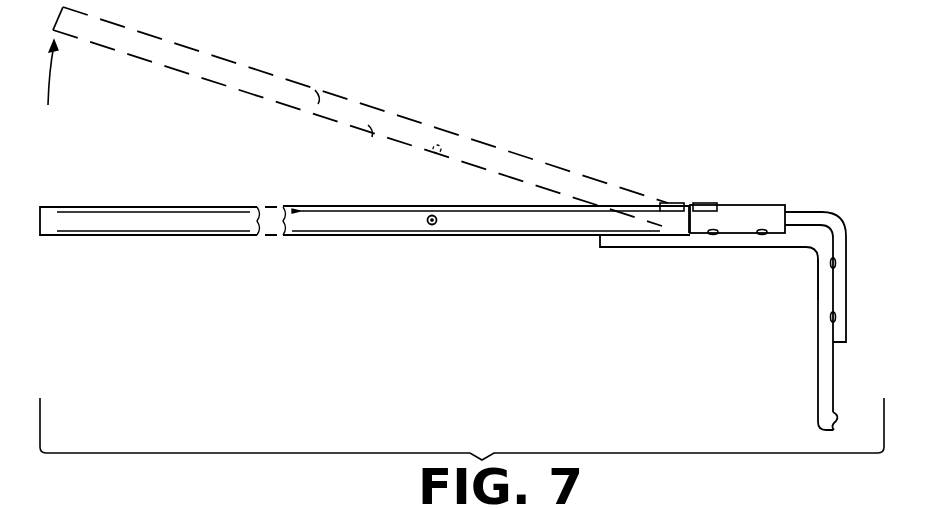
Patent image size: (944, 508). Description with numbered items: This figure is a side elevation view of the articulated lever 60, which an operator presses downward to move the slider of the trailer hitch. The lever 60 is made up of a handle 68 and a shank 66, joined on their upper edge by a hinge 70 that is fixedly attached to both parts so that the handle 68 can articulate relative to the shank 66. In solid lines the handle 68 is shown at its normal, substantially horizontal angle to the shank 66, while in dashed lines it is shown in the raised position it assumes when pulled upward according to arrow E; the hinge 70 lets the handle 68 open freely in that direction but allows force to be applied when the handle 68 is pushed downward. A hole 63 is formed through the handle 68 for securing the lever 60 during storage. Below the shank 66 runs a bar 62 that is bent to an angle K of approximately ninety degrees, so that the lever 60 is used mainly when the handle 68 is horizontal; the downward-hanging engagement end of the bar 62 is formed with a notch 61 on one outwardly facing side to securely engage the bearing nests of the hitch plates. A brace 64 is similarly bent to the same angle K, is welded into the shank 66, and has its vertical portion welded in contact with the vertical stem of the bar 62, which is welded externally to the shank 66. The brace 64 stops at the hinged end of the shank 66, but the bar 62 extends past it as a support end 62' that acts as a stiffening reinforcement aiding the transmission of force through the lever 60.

The lever 60 is at (282, 244).
The notch 61 is at (836, 420).
The bar 62 is at (800, 365).
The support end 62' is at (709, 267).
The hole 63 is at (432, 215).
The brace 64 is at (805, 212).
The shank 66 is at (745, 206).
The handle 68 is at (195, 218).
The hinge 70 is at (688, 206).
The arrow E is at (50, 80).
The angle K is at (778, 246).